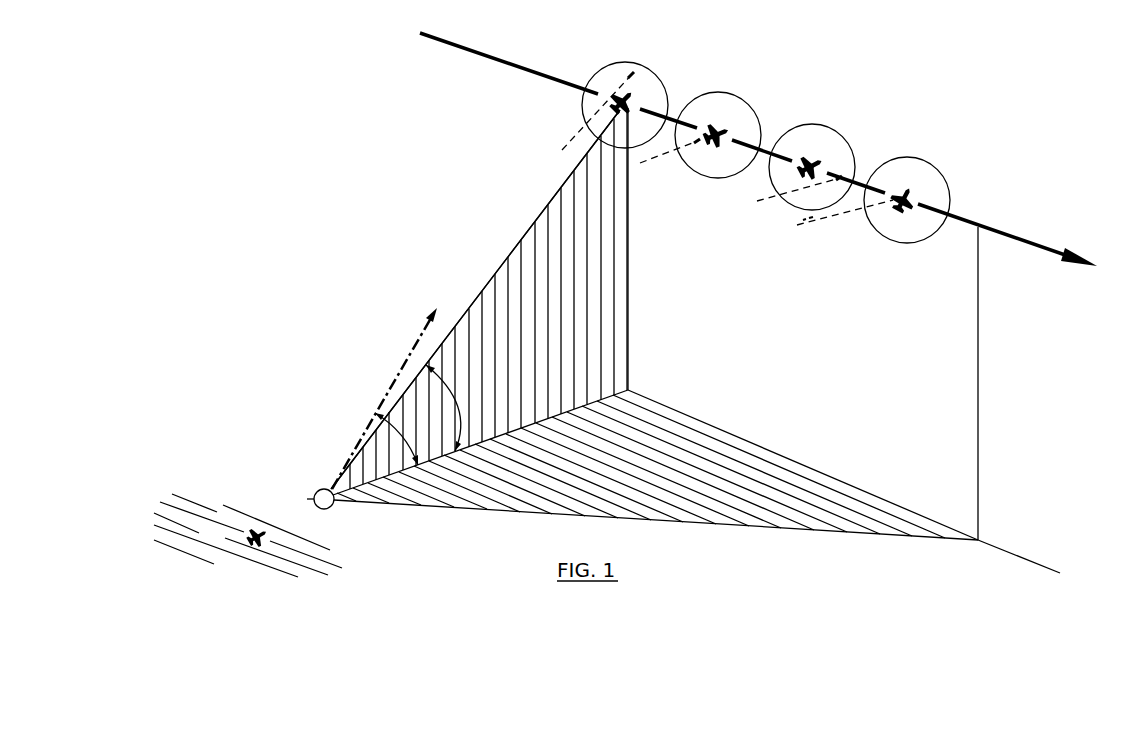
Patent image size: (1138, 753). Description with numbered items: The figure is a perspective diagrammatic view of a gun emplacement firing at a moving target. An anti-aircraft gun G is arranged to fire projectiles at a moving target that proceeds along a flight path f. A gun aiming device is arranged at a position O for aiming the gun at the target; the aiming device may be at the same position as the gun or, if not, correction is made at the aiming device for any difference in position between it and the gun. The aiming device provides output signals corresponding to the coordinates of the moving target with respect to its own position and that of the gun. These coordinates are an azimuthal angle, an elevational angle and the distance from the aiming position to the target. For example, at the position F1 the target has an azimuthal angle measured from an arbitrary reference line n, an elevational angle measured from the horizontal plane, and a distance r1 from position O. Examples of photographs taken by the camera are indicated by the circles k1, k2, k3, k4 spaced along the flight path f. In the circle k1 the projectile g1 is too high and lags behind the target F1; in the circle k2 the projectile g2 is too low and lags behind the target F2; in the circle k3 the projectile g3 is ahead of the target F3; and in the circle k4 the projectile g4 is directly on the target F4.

The aiming device position O is at (327, 509).
The flight path f is at (765, 155).
The reference line n is at (419, 330).
The distance r1 is at (475, 299).
The photograph circle k1 is at (658, 77).
The photograph circle k2 is at (751, 107).
The photograph circle k3 is at (845, 139).
The photograph circle k4 is at (940, 172).
The moving target F1 is at (629, 101).
The moving target F2 is at (724, 134).
The moving target F3 is at (818, 165).
The moving target F4 is at (910, 197).
The projectile g1 is at (627, 79).
The projectile g2 is at (697, 145).
The projectile g3 is at (836, 178).
The projectile g4 is at (905, 206).
The anti-aircraft gun G is at (283, 512).